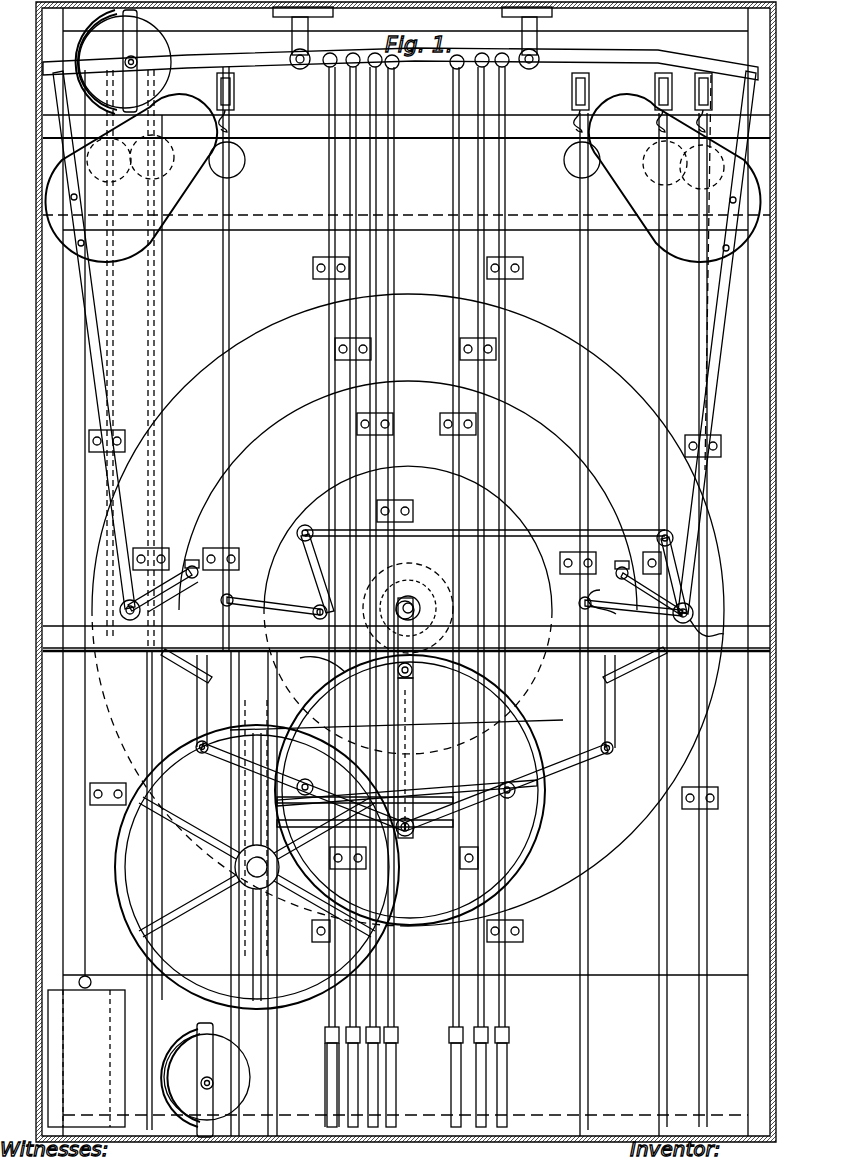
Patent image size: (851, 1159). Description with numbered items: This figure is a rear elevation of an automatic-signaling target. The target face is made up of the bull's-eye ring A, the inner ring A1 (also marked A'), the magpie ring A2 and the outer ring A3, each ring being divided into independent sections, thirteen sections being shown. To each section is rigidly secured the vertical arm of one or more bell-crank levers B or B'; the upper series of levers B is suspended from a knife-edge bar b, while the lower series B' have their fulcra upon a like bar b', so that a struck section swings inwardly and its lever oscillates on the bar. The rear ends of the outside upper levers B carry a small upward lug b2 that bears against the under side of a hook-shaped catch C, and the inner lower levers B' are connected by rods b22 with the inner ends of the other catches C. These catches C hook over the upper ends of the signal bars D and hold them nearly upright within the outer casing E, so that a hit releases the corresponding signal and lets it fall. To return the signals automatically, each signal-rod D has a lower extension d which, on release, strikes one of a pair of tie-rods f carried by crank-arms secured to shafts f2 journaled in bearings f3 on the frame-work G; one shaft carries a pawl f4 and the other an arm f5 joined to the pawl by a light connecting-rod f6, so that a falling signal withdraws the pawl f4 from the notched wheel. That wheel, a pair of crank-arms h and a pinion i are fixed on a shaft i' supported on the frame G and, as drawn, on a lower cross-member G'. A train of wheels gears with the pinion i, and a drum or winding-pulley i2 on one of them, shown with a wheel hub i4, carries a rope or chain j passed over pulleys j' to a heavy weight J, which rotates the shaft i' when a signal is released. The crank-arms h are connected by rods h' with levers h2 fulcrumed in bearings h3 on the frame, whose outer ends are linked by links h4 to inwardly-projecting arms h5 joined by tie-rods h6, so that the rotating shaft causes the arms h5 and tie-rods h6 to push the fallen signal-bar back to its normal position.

The bull's-eye ring A is at (408, 610).
The inner ring A1 is at (290, 488).
The magpie ring A2 is at (208, 416).
The outer ring A3 is at (205, 274).
The inner ring A' is at (635, 697).
The bell-crank lever B is at (405, 601).
The bell-crank lever B' is at (411, 1085).
The hook-shaped catch C is at (214, 62).
The signal bar D is at (60, 94).
The outer casing E is at (770, 296).
The frame-work G is at (406, 638).
The lower cross beam G' is at (405, 990).
The weight J is at (160, 240).
The knife-edge bar b is at (404, 134).
The knife-edge bar b' is at (619, 1110).
The upward extension or lug b2 is at (220, 82).
The rod b22 is at (330, 186).
The extension d is at (404, 671).
The tie-rod f is at (222, 600).
The shaft f2 is at (726, 580).
The bearing f3 is at (714, 632).
The pawl f4 is at (458, 624).
The arm f5 is at (481, 569).
The connecting-rod f6 is at (530, 540).
The crank-arm h is at (410, 638).
The rod h' is at (421, 758).
The lever h2 is at (404, 786).
The bearing h3 is at (407, 803).
The link h4 is at (196, 710).
The inwardly-projecting arm h5 is at (328, 674).
The tie-rod h6 is at (434, 577).
The pinion i is at (408, 600).
The shaft i' is at (408, 608).
The drum or winding-pulley i2 is at (282, 830).
The wheel hub i4 is at (234, 872).
The rope or chain j is at (163, 603).
The sheave or pulley j' is at (163, 573).